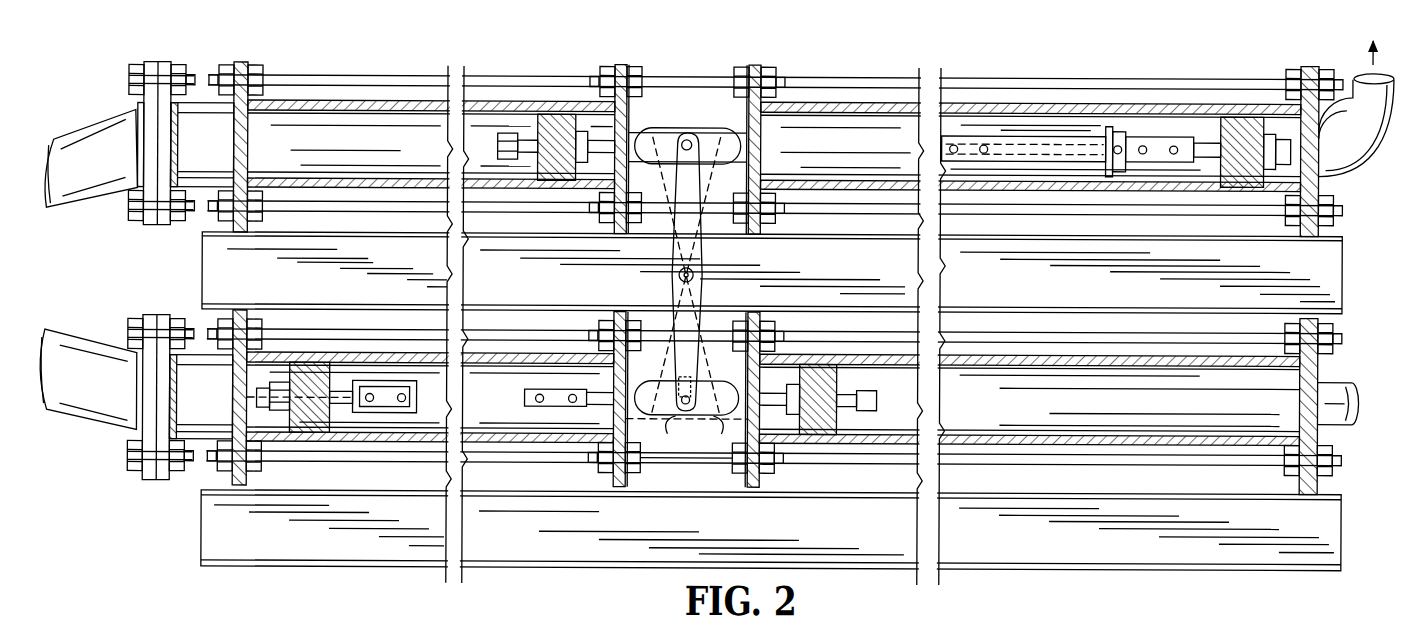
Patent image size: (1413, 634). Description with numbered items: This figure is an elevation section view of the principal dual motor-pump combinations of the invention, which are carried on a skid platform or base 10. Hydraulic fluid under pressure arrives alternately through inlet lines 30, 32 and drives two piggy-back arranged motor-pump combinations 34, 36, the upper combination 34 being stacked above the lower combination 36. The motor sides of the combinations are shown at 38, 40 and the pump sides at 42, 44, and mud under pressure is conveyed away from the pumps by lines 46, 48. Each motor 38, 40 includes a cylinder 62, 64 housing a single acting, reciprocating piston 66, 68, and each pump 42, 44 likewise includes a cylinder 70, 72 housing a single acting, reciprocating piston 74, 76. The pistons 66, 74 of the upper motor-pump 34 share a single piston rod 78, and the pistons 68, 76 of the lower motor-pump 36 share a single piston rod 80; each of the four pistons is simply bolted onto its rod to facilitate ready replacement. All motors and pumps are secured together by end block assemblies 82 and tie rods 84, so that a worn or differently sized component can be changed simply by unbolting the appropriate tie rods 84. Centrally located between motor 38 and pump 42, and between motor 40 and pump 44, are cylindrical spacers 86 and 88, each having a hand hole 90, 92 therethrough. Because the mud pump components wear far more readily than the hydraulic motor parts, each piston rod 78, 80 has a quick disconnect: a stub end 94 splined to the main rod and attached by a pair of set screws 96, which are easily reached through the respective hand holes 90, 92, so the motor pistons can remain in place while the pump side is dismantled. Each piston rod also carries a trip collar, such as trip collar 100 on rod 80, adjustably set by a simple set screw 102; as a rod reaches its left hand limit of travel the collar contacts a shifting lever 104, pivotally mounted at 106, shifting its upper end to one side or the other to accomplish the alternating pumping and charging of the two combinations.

The skid platform or base 10 is at (570, 552).
The inlet line 30 is at (1362, 147).
The inlet line 32 is at (1342, 384).
The upper motor-pump combination 34 is at (907, 264).
The lower motor-pump combination 36 is at (754, 296).
The motor 38 is at (1055, 101).
The motor 40 is at (1016, 330).
The pump 42 is at (404, 100).
The pump 44 is at (508, 331).
The line 46 is at (102, 124).
The line 48 is at (97, 327).
The cylinder 62 is at (1110, 125).
The cylinder 64 is at (1100, 360).
The piston 66 is at (1237, 125).
The piston 68 is at (815, 368).
The cylinder 70 is at (493, 103).
The cylinder 72 is at (352, 356).
The piston 74 is at (540, 113).
The piston 76 is at (317, 420).
The piston rod 78 is at (835, 140).
The piston rod 80 is at (425, 380).
The end block assembly 82 is at (241, 62).
The tie rod 84 is at (345, 75).
The cylindrical spacer 86 is at (688, 82).
The cylindrical spacer 88 is at (693, 463).
The hand hole 90 is at (718, 133).
The hand hole 92 is at (710, 437).
The stub end 94 is at (668, 437).
The set screw 96 is at (573, 392).
The trip collar 100 is at (690, 413).
The set screw 102 is at (1125, 152).
The shifting lever 104 is at (684, 230).
The pivot 106 is at (693, 270).